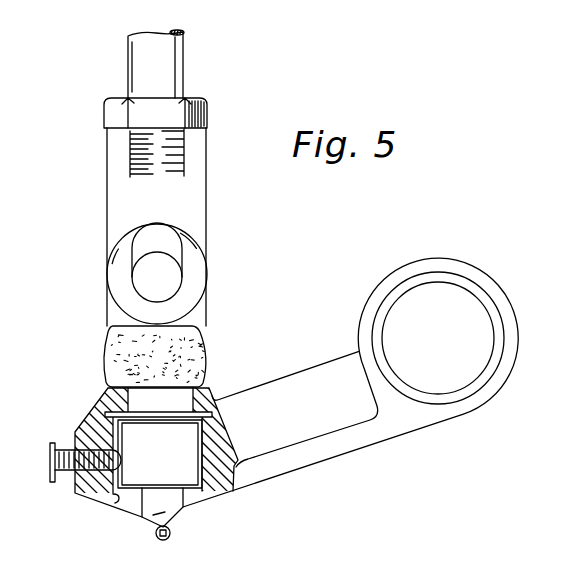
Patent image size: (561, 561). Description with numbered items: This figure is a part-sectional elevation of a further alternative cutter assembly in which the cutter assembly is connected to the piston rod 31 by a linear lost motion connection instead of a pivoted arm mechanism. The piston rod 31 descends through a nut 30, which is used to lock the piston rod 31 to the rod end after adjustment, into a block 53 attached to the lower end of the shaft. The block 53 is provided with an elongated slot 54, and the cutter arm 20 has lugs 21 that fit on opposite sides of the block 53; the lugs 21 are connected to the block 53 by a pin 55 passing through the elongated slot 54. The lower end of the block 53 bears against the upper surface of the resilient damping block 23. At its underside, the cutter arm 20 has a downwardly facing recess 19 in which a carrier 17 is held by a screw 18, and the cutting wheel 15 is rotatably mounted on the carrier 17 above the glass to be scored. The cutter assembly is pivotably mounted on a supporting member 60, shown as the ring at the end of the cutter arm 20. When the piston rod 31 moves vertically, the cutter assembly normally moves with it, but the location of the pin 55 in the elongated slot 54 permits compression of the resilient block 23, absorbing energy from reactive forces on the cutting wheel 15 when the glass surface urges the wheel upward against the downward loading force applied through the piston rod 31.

The cutting wheel 15 is at (175, 539).
The carrier 17 is at (169, 460).
The screw 18 is at (49, 468).
The downwardly facing recess 19 is at (114, 503).
The cutter arm 20 is at (345, 445).
The lugs 21 is at (201, 260).
The resilient block 23 is at (195, 353).
The nut 30 is at (115, 110).
The piston rod 31 is at (162, 58).
The block 53 is at (193, 190).
The elongated slot 54 is at (136, 229).
The pin 55 is at (140, 278).
The supporting member 60 is at (465, 303).